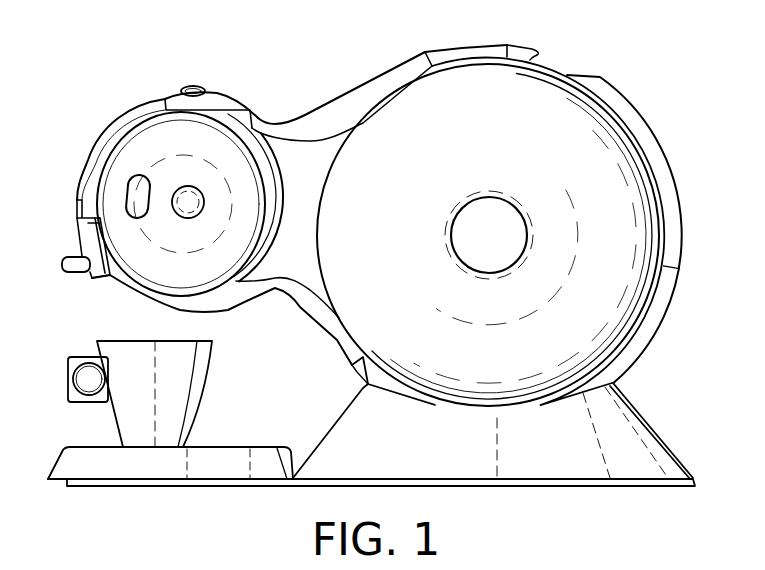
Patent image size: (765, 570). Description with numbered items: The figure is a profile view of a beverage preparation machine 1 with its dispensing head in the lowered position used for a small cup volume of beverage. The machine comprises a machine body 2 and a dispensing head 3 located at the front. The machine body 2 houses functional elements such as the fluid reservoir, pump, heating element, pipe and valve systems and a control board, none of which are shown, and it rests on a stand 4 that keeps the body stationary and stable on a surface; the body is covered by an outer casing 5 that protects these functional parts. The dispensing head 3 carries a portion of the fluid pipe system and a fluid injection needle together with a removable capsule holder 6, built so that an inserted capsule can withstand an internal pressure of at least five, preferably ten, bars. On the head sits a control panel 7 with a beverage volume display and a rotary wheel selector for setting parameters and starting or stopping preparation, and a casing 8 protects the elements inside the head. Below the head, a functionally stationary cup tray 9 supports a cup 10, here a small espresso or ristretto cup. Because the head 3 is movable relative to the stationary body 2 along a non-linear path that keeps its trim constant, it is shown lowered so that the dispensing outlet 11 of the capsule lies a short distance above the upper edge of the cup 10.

The beverage preparation machine 1 is at (669, 112).
The machine body 2 is at (567, 75).
The dispensing head 3 is at (115, 117).
The stand 4 is at (460, 460).
The outer casing 5 is at (481, 153).
The removable capsule holder 6 is at (82, 233).
The control panel 7 is at (193, 86).
The casing 8 is at (180, 172).
The cup tray 9 is at (78, 467).
The cup 10 is at (140, 421).
The dispensing outlet 11 is at (145, 307).